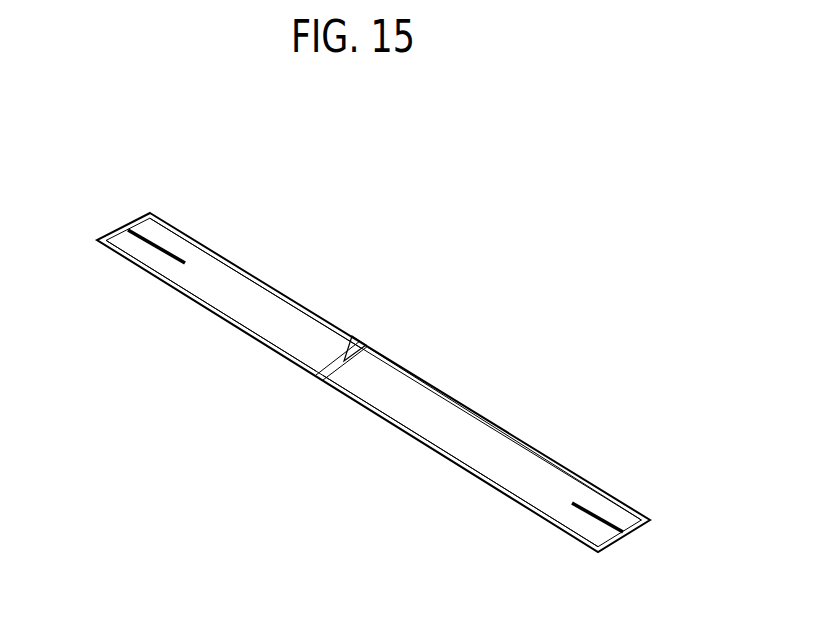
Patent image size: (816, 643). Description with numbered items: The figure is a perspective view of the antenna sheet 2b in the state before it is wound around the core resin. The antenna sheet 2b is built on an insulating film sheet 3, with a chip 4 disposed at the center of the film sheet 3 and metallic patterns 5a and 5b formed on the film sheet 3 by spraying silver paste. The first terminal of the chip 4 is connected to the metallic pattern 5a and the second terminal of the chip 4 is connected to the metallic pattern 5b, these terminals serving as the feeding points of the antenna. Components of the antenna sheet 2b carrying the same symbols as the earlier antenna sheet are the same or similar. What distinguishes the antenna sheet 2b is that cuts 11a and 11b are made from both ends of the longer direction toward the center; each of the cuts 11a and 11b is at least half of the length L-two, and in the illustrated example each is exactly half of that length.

The antenna sheet 2b is at (652, 249).
The insulating film sheet 3 is at (650, 520).
The chip 4 is at (358, 342).
The metallic pattern 5a is at (272, 302).
The metallic pattern 5b is at (472, 426).
The cut 11a is at (156, 252).
The cut 11b is at (597, 521).